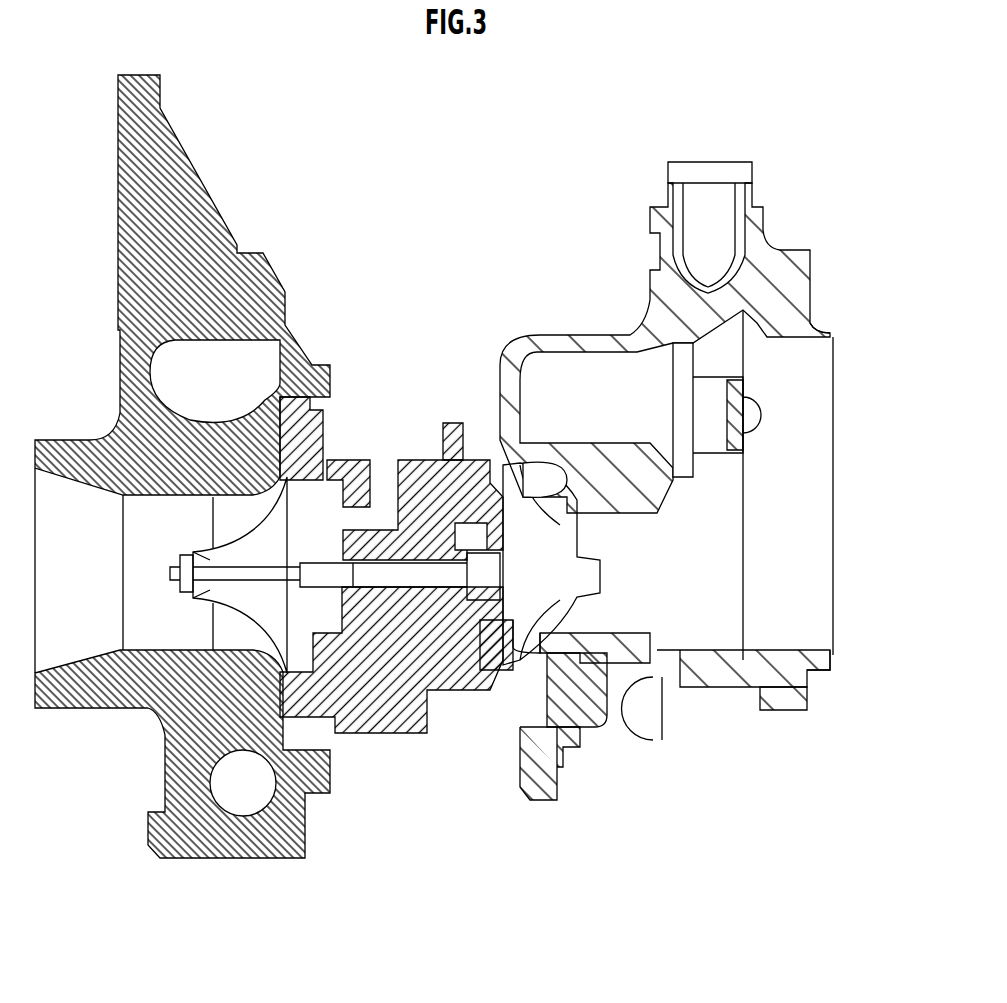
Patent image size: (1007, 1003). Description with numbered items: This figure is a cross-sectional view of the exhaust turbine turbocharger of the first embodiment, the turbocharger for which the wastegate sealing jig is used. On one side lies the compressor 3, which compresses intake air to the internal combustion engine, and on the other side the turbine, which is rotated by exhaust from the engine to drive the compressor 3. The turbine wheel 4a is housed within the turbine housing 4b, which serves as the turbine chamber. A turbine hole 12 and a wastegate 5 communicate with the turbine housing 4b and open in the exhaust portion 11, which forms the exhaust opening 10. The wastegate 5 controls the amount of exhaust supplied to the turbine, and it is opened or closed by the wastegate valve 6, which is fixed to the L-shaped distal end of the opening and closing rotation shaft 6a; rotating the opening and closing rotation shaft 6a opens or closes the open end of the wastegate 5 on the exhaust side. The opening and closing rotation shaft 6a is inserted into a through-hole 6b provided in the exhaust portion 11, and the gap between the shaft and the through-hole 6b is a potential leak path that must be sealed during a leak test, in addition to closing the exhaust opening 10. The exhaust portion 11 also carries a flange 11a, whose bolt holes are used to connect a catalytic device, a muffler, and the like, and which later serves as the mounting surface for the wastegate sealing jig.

The compressor 3 is at (148, 712).
The turbine wheel 4a is at (537, 627).
The turbine housing 4b is at (593, 745).
The wastegate 5 is at (580, 395).
The wastegate valve 6 is at (660, 410).
The opening and closing rotation shaft 6a is at (710, 230).
The through-hole 6b is at (692, 227).
The exhaust opening 10 is at (770, 586).
The exhaust portion 11 is at (837, 662).
The flange 11a is at (818, 695).
The turbine hole 12 is at (667, 683).